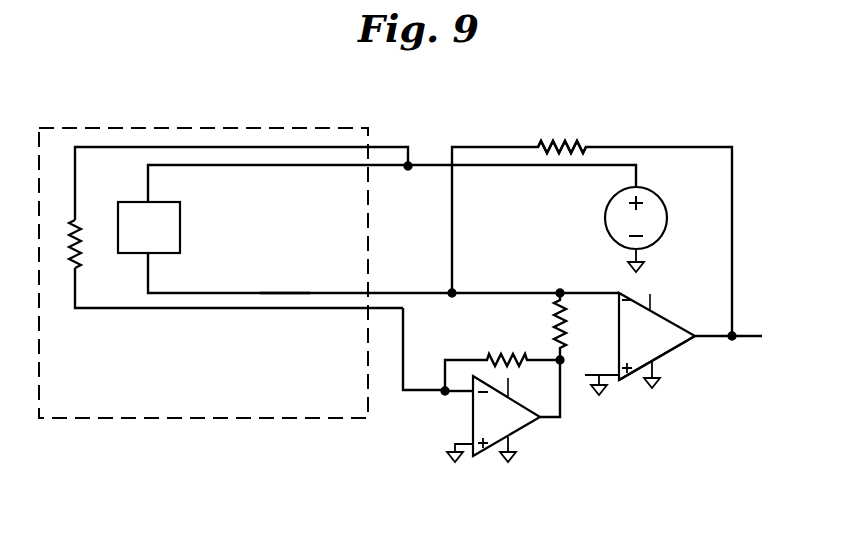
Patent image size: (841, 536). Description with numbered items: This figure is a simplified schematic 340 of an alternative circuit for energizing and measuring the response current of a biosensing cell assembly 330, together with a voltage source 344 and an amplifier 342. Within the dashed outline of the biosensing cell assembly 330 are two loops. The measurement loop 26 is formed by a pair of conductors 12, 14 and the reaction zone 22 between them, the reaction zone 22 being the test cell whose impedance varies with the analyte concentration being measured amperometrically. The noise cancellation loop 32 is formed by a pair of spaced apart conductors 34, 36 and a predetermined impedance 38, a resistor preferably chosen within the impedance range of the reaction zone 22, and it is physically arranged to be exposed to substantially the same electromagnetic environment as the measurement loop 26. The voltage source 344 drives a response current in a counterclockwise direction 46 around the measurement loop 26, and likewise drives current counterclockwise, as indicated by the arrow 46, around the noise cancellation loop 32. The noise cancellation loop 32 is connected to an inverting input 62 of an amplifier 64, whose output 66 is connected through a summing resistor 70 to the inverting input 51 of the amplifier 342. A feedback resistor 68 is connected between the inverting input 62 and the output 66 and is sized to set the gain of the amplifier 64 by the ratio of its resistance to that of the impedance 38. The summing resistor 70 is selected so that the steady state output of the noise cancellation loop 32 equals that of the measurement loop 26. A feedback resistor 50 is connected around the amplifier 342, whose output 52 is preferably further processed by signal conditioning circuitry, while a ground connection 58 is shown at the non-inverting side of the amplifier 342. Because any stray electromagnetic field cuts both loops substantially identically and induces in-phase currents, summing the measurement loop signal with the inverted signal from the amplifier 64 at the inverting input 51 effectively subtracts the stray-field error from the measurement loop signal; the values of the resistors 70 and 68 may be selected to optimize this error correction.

The conductor 12 is at (265, 165).
The conductor 14 is at (315, 293).
The reaction zone 22 is at (159, 240).
The measurement loop 26 is at (293, 262).
The noise cancellation loop 32 is at (117, 285).
The conductor 34 is at (283, 308).
The conductor 36 is at (204, 147).
The predetermined impedance 38 is at (85, 258).
The counterclockwise direction 46 is at (83, 190).
The feedback resistor 50 is at (585, 143).
The inverting input 51 is at (619, 290).
The output 52 is at (753, 338).
The ground connection 58 is at (585, 378).
The inverting input 62 is at (455, 394).
The amplifier 64 is at (520, 438).
The output 66 is at (563, 362).
The feedback resistor 68 is at (505, 355).
The summing resistor 70 is at (564, 312).
The biosensing cell assembly 330 is at (288, 125).
The simplified schematic 340 is at (566, 122).
The amplifier 342 is at (668, 360).
The voltage source 344 is at (652, 192).